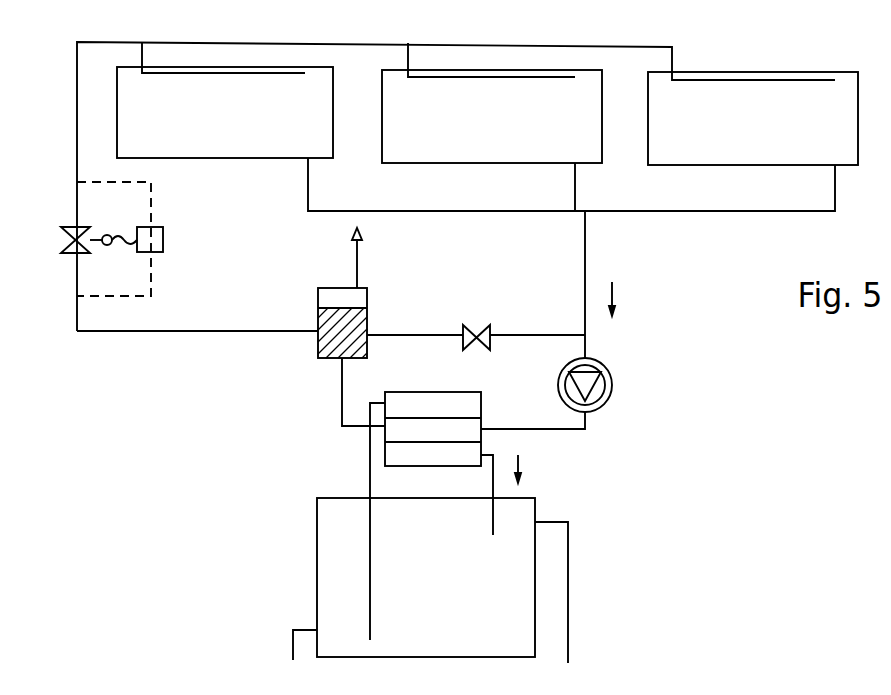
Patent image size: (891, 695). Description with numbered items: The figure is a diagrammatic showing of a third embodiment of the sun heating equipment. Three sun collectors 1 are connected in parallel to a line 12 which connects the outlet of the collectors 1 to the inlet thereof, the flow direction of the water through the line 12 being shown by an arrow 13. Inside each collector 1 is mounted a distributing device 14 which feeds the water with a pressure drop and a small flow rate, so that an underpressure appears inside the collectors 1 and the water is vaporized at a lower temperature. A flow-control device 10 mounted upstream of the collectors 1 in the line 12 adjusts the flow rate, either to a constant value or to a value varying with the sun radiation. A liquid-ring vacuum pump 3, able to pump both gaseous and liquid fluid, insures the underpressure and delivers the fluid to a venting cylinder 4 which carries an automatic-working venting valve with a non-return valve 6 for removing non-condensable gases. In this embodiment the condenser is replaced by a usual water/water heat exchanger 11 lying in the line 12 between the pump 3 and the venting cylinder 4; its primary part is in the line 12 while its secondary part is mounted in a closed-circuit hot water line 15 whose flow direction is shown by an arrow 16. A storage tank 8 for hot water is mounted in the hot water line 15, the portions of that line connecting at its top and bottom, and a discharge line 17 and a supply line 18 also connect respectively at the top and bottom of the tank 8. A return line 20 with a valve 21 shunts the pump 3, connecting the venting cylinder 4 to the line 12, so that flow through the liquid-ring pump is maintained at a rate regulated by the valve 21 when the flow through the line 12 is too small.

The sun collector 1 is at (240, 150).
The vacuum pump 3 is at (612, 387).
The venting cylinder 4 is at (367, 317).
The venting valve with non-return valve 6 is at (357, 255).
The storage tank 8 is at (316, 553).
The flow-control device 10 is at (61, 240).
The water/water heat exchanger 11 is at (481, 402).
The line 12 is at (183, 333).
The arrow 13 is at (624, 299).
The distributing device 14 is at (242, 73).
The hot water line 15 is at (370, 474).
The arrow 16 is at (514, 493).
The discharge line 17 is at (570, 634).
The supply line 18 is at (293, 647).
The return line 20 is at (536, 334).
The valve 21 is at (476, 329).